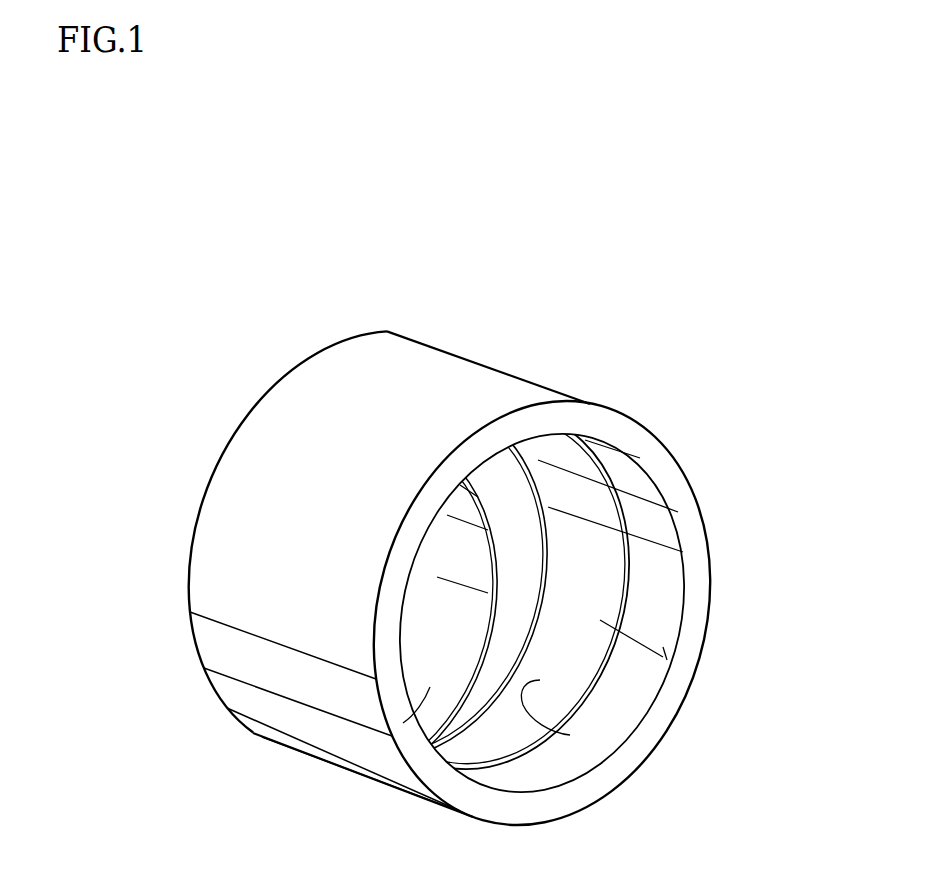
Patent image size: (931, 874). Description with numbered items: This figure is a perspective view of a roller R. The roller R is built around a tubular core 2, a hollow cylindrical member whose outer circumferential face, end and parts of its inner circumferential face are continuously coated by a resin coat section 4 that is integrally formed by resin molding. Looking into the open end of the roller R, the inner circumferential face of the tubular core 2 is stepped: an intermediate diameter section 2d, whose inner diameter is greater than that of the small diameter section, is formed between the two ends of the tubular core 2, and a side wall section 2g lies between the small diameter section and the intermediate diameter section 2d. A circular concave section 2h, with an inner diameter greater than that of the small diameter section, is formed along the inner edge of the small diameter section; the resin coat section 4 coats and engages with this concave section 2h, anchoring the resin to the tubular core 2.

The roller R is at (268, 272).
The resin coat section 4 is at (440, 367).
The tubular core 2 is at (590, 618).
The side wall section 2g is at (517, 552).
The intermediate diameter section 2d is at (553, 727).
The circular concave section 2h is at (450, 653).